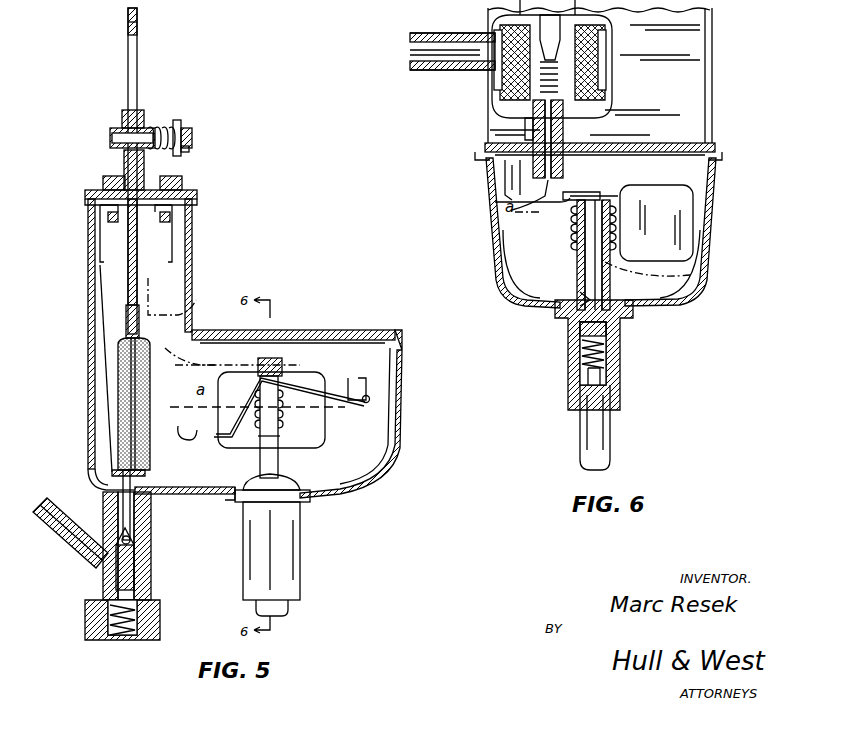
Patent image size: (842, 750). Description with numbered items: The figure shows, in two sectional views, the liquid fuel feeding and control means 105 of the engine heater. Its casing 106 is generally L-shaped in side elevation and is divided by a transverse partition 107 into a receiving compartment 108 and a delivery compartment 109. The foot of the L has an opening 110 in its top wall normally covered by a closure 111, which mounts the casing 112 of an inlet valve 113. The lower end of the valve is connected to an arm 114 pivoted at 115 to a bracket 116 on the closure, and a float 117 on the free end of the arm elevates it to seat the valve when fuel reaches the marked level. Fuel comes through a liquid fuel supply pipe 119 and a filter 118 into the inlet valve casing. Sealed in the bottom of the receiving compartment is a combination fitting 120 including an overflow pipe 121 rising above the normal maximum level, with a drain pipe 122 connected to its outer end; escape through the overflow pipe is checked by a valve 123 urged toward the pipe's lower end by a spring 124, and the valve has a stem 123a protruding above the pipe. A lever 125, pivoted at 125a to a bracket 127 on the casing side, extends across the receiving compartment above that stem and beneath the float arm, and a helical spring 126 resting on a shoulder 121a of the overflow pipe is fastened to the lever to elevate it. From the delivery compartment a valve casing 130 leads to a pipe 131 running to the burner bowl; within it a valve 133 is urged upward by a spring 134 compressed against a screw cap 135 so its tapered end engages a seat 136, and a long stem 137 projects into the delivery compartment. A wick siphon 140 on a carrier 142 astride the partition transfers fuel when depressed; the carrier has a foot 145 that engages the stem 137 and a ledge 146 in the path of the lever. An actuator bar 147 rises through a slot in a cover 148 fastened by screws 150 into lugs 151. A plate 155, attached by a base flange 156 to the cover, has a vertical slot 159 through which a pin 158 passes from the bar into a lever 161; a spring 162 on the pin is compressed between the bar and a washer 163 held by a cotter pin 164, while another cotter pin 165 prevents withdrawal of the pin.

In FIG. 5, the liquid fuel feeding and control means 105 is at (400, 421).
In FIG. 6, the liquid fuel feeding and control means 105 is at (721, 223).
In FIG. 5, the casing 106 is at (88, 346).
In FIG. 5, the transverse partition 107 is at (143, 480).
In FIG. 5, the receiving compartment 108 is at (350, 443).
In FIG. 6, the receiving compartment 108 is at (500, 262).
In FIG. 5, the delivery compartment 109 is at (96, 479).
In FIG. 5, the opening 110 is at (386, 356).
In FIG. 5, the closure 111 is at (396, 336).
In FIG. 6, the closure 111 is at (632, 148).
In FIG. 6, the casing of inlet valve 112 is at (533, 128).
In FIG. 6, the inlet valve 113 is at (548, 212).
In FIG. 5, the arm 114 is at (283, 366).
In FIG. 6, the arm 114 is at (566, 204).
In FIG. 6, the pivot 115 is at (495, 203).
In FIG. 6, the bracket 116 is at (505, 173).
In FIG. 5, the float 117 is at (300, 445).
In FIG. 6, the float 117 is at (690, 212).
In FIG. 6, the filter 118 is at (608, 68).
In FIG. 6, the liquid fuel supply pipe 119 is at (436, 70).
In FIG. 5, the combination fitting 120 is at (310, 541).
In FIG. 6, the combination fitting 120 is at (561, 338).
In FIG. 5, the overflow pipe 121 is at (265, 455).
In FIG. 6, the overflow pipe 121 is at (577, 277).
In FIG. 6, the shoulder 121a is at (647, 270).
In FIG. 5, the drain pipe 122 is at (290, 605).
In FIG. 6, the drain pipe 122 is at (585, 428).
In FIG. 6, the valve 123 is at (608, 332).
In FIG. 6, the stem 123a is at (585, 294).
In FIG. 6, the spring 124 is at (606, 352).
In FIG. 5, the lever 125 is at (289, 397).
In FIG. 6, the lever 125 is at (594, 187).
In FIG. 5, the pivot 125a is at (378, 393).
In FIG. 5, the helical spring 126 is at (283, 420).
In FIG. 6, the helical spring 126 is at (610, 218).
In FIG. 5, the bracket 127 is at (355, 380).
In FIG. 5, the valve casing 130 is at (152, 546).
In FIG. 5, the pipe 131 is at (75, 548).
In FIG. 5, the valve 133 is at (117, 578).
In FIG. 5, the spring 134 is at (110, 628).
In FIG. 5, the screw cap 135 is at (160, 619).
In FIG. 5, the seat 136 is at (148, 522).
In FIG. 5, the stem 137 is at (120, 512).
In FIG. 5, the wick siphon 140 is at (118, 381).
In FIG. 5, the carrier 142 is at (128, 334).
In FIG. 5, the foot 145 is at (125, 470).
In FIG. 5, the ledge 146 is at (224, 363).
In FIG. 5, the actuator bar 147 is at (140, 272).
In FIG. 5, the cover 148 is at (196, 195).
In FIG. 5, the screws 150 is at (110, 176).
In FIG. 5, the lugs 151 is at (110, 226).
In FIG. 5, the plate 155 is at (128, 23).
In FIG. 5, the base flange 156 is at (88, 193).
In FIG. 5, the pin 158 is at (191, 137).
In FIG. 5, the vertical slot 159 is at (133, 68).
In FIG. 5, the lever 161 is at (126, 127).
In FIG. 5, the spring 162 is at (153, 128).
In FIG. 5, the washer 163 is at (176, 121).
In FIG. 5, the cotter pin 164 is at (184, 150).
In FIG. 5, the cotter pin 165 is at (120, 132).